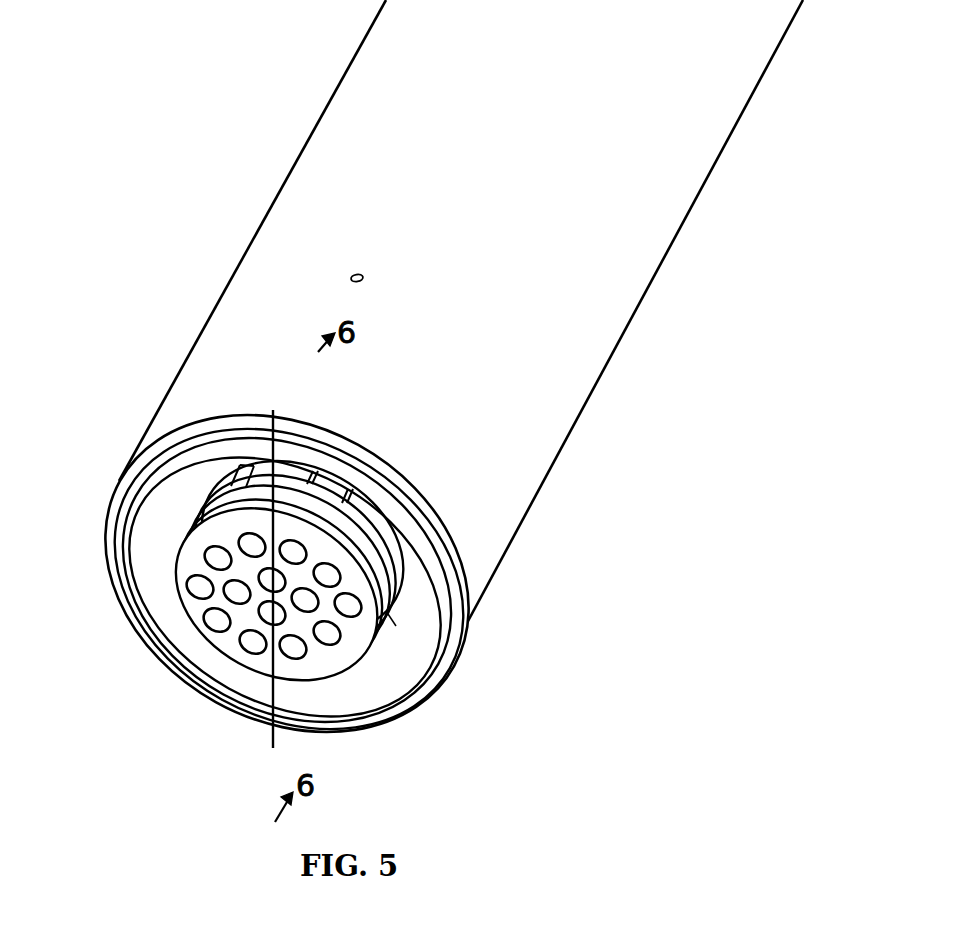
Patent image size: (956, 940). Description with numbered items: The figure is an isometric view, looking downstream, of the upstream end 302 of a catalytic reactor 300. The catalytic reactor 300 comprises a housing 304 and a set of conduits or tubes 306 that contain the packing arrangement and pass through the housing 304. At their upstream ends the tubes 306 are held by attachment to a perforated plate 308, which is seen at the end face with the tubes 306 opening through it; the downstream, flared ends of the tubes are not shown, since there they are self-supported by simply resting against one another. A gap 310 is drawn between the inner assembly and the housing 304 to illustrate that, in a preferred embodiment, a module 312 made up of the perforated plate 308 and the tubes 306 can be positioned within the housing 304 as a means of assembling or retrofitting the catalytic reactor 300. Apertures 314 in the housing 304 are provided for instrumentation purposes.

The catalytic reactor 300 is at (259, 110).
The upstream end 302 is at (145, 677).
The housing 304 is at (545, 434).
The tubes 306 is at (383, 536).
The perforated plate 308 is at (325, 657).
The gap 310 is at (391, 619).
The module 312 is at (260, 512).
The apertures 314 is at (366, 274).